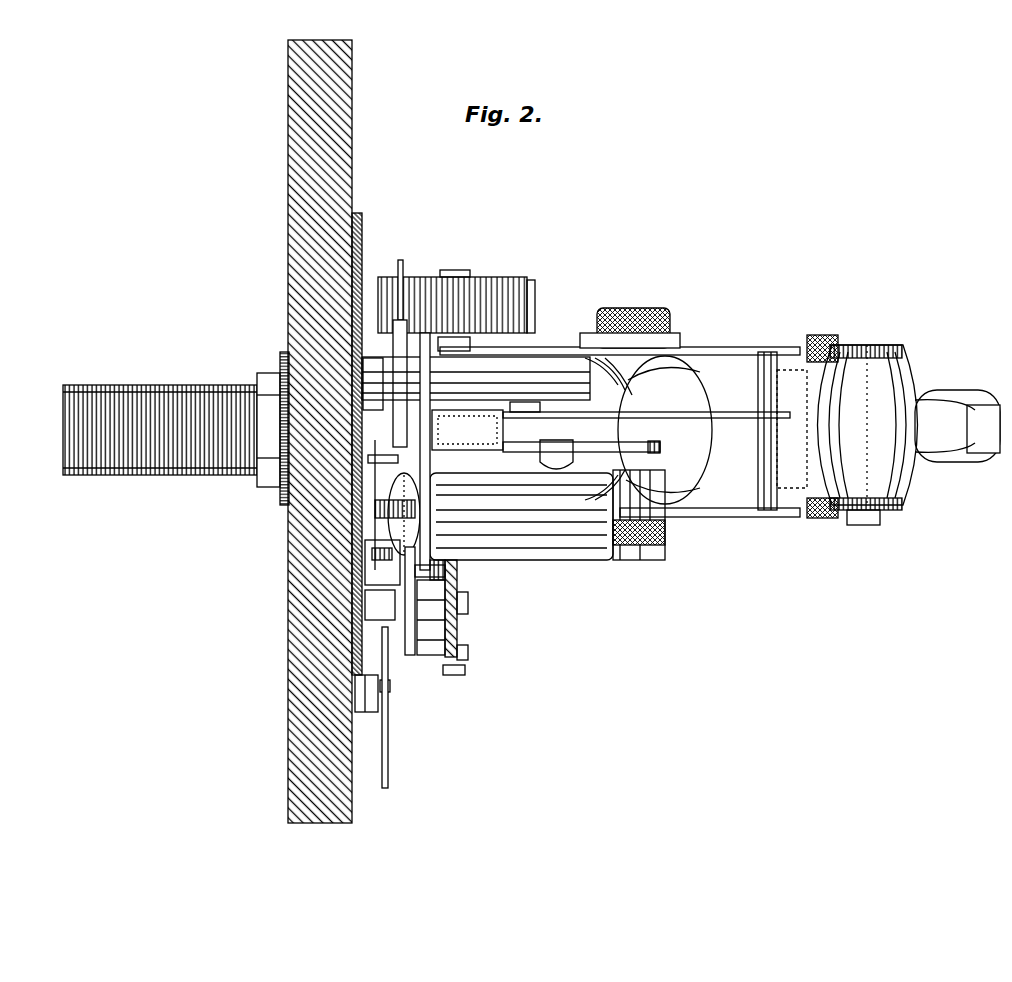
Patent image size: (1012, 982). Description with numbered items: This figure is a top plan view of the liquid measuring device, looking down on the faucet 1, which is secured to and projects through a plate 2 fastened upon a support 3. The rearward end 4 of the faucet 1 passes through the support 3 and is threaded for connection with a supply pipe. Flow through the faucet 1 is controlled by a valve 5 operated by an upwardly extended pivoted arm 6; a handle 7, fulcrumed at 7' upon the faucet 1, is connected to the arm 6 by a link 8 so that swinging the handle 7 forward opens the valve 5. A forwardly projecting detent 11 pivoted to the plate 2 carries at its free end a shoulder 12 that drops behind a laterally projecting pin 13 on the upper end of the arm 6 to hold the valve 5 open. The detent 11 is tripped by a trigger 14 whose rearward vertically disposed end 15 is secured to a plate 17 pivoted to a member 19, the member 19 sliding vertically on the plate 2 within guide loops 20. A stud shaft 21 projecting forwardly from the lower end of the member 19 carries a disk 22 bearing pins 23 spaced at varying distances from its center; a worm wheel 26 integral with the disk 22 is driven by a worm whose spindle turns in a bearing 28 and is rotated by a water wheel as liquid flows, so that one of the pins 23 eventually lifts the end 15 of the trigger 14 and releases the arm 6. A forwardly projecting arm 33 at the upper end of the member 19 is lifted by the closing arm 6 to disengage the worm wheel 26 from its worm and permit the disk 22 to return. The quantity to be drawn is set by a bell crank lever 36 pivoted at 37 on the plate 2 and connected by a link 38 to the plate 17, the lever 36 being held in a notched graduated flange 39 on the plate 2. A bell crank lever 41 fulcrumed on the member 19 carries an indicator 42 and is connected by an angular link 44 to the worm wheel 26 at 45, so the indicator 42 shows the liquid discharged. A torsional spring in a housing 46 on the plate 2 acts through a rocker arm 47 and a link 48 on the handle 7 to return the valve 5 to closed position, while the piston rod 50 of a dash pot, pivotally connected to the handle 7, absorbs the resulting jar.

The faucet 1 is at (525, 390).
The plate 2 is at (363, 243).
The support 3 is at (300, 175).
The rearward end 4 is at (148, 478).
The valve 5 is at (690, 392).
The pivoted arm 6 is at (606, 390).
The handle 7 is at (881, 435).
The fulcrum 7' is at (827, 431).
The link 8 is at (688, 404).
The detent 11 is at (648, 438).
The shoulder 12 is at (559, 457).
The pin 13 is at (560, 418).
The trigger 14 is at (632, 480).
The rearward end of trigger 15 is at (396, 482).
The plate 17 is at (392, 575).
The member 19 is at (388, 466).
The guide loops 20 is at (390, 558).
The stud shaft 21 is at (470, 607).
The disk 22 is at (412, 656).
The pins 23 is at (385, 590).
The worm wheel 26 is at (468, 572).
The bearing 28 is at (470, 653).
The arm 33 is at (467, 430).
The bell crank lever 36 is at (392, 690).
The pivot 37 is at (385, 655).
The link 38 is at (385, 612).
The notched graduated flange 39 is at (388, 712).
The bell crank lever 41 is at (395, 345).
The indicator 42 is at (404, 268).
The angular link 44 is at (283, 358).
The connection 45 is at (524, 568).
The housing 46 is at (492, 290).
The rocker arm 47 is at (447, 338).
The link 48 is at (540, 345).
The piston rod 50 is at (722, 518).